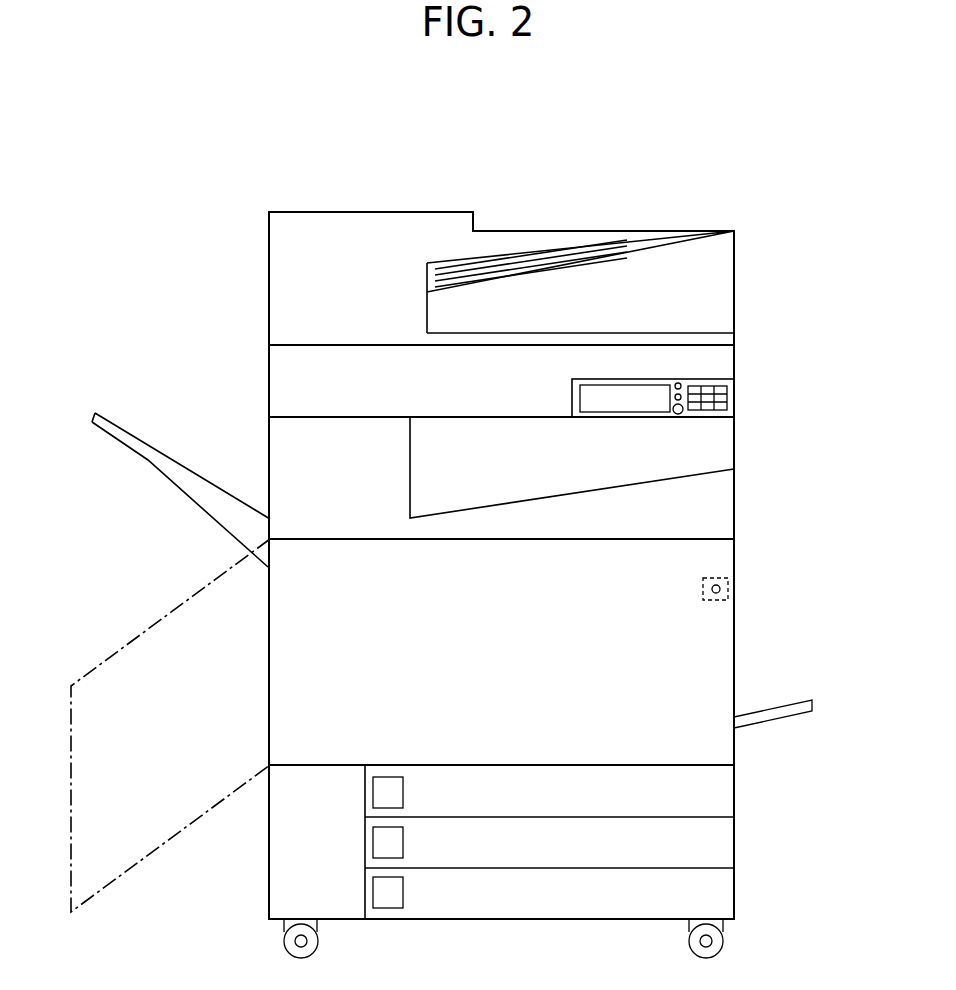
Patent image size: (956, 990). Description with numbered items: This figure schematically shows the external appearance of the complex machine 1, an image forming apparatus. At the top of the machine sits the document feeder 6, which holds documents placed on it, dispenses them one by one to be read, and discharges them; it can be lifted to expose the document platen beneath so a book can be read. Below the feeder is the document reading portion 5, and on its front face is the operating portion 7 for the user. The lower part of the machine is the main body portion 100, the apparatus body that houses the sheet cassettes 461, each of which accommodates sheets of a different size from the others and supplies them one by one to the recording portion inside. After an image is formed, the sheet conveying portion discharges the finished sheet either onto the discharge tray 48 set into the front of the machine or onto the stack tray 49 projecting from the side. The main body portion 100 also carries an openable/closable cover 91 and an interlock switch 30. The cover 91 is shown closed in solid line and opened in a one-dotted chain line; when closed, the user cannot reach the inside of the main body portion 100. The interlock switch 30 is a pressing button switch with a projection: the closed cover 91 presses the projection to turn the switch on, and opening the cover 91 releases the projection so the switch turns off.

The complex machine 1 is at (160, 132).
The main body portion 100 is at (757, 564).
The document feeder 6 is at (537, 242).
The document reading portion 5 is at (291, 391).
The operating portion 7 is at (735, 396).
The discharge tray 48 is at (637, 488).
The stack tray 49 is at (190, 508).
The interlock switch 30 is at (728, 589).
The openable/closable cover 91 is at (697, 658).
The sheet cassettes 461 is at (725, 890).